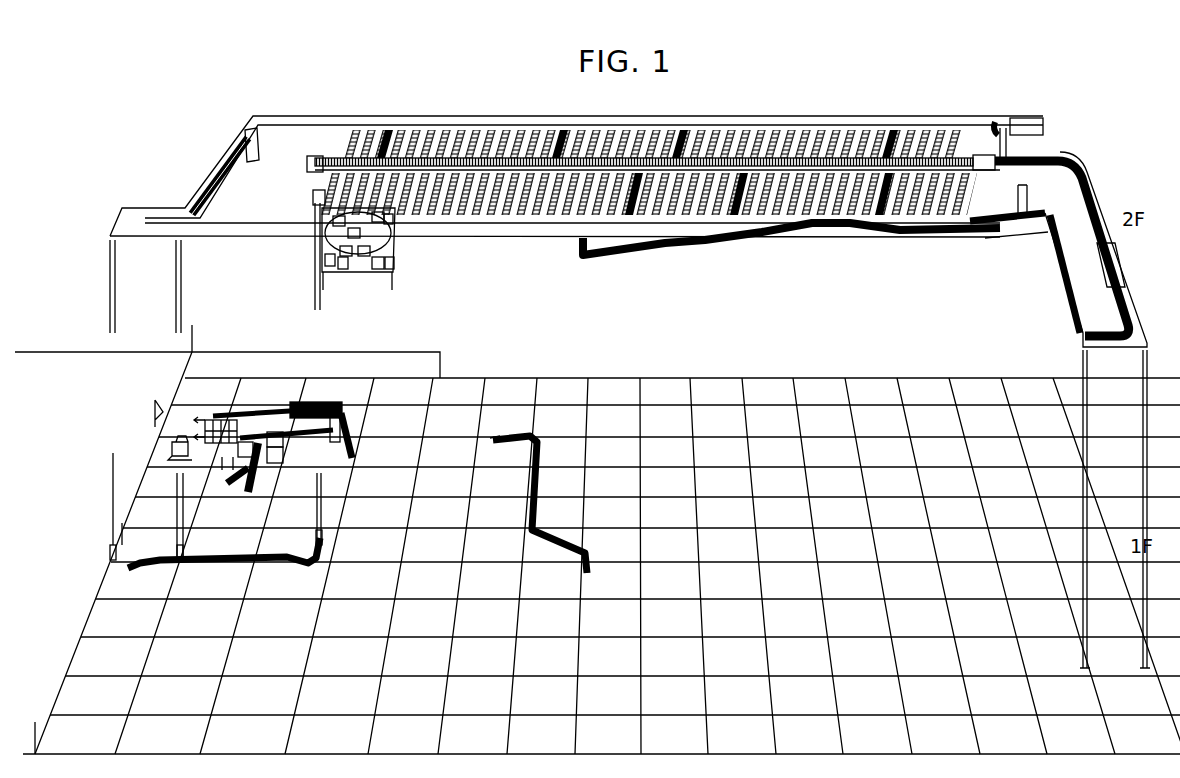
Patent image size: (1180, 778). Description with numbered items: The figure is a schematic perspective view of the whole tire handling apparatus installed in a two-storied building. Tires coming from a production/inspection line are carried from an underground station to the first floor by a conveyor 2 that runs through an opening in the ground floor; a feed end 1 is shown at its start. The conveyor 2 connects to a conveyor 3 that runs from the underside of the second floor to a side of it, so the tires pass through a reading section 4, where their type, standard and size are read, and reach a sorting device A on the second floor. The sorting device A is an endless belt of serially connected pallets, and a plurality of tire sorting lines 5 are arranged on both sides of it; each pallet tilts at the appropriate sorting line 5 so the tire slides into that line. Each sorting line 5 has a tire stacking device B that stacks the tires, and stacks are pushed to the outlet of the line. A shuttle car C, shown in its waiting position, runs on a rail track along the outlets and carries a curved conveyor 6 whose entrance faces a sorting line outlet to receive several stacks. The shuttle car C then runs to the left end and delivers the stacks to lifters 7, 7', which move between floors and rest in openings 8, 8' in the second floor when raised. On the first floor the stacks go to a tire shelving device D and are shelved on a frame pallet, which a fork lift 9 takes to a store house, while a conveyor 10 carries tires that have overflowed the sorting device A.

The feed end of pipe conveyor 1 is at (497, 440).
The conveyor 2 is at (537, 508).
The conveyor 3 is at (677, 247).
The reading section 4 is at (1117, 262).
The tire sorting lines 5 is at (695, 143).
The curved conveyor 6 is at (1003, 123).
The lifter 7 is at (270, 471).
The lifter 7' is at (215, 484).
The opening 8 is at (264, 155).
The opening 8' is at (220, 163).
The fork lift 9 is at (177, 455).
The conveyor 10 is at (230, 557).
The sorting device A is at (925, 150).
The tire stacking device B is at (745, 157).
The shuttle car C is at (1042, 120).
The tire shelving device D is at (303, 385).